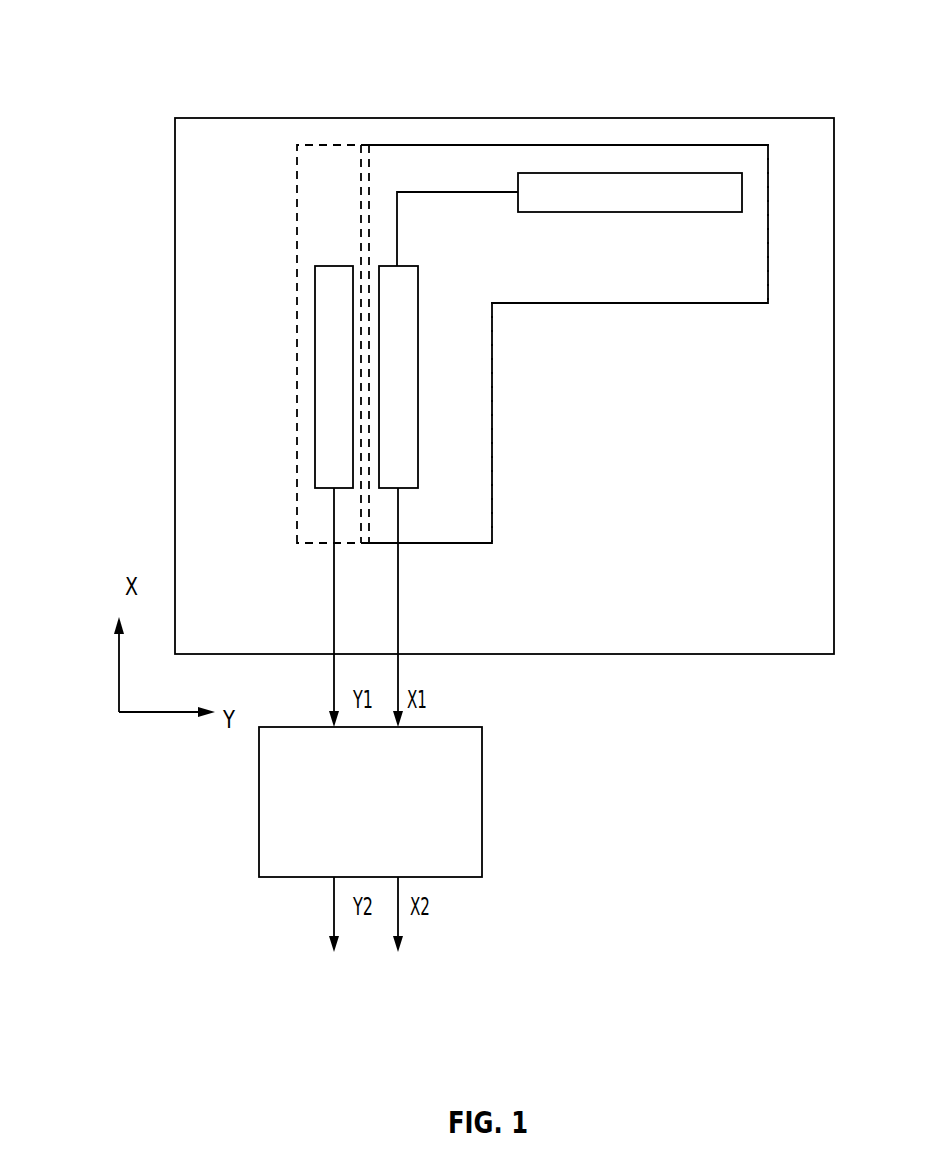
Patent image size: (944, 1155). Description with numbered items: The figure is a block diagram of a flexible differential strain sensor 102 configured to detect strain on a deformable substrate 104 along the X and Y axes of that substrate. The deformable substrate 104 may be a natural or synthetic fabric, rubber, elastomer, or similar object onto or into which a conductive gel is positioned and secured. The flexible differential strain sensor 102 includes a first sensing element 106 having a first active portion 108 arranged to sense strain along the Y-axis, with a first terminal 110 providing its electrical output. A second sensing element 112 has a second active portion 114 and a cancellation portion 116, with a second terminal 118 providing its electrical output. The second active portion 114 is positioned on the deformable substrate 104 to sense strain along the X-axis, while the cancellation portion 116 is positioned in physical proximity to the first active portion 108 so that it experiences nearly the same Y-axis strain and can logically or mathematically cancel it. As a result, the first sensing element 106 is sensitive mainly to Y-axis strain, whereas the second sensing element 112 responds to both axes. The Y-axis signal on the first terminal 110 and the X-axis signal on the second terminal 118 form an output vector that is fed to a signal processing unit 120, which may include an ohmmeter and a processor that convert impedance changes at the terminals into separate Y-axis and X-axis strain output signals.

The flexible differential strain sensor 102 is at (146, 50).
The deformable substrate 104 is at (703, 638).
The first sensing element 106 is at (297, 443).
The first active portion 108 is at (335, 333).
The first terminal 110 is at (334, 670).
The second sensing element 112 is at (492, 458).
The second active portion 114 is at (629, 190).
The cancellation portion 116 is at (402, 323).
The second terminal 118 is at (398, 670).
The signal processing unit 120 is at (295, 813).